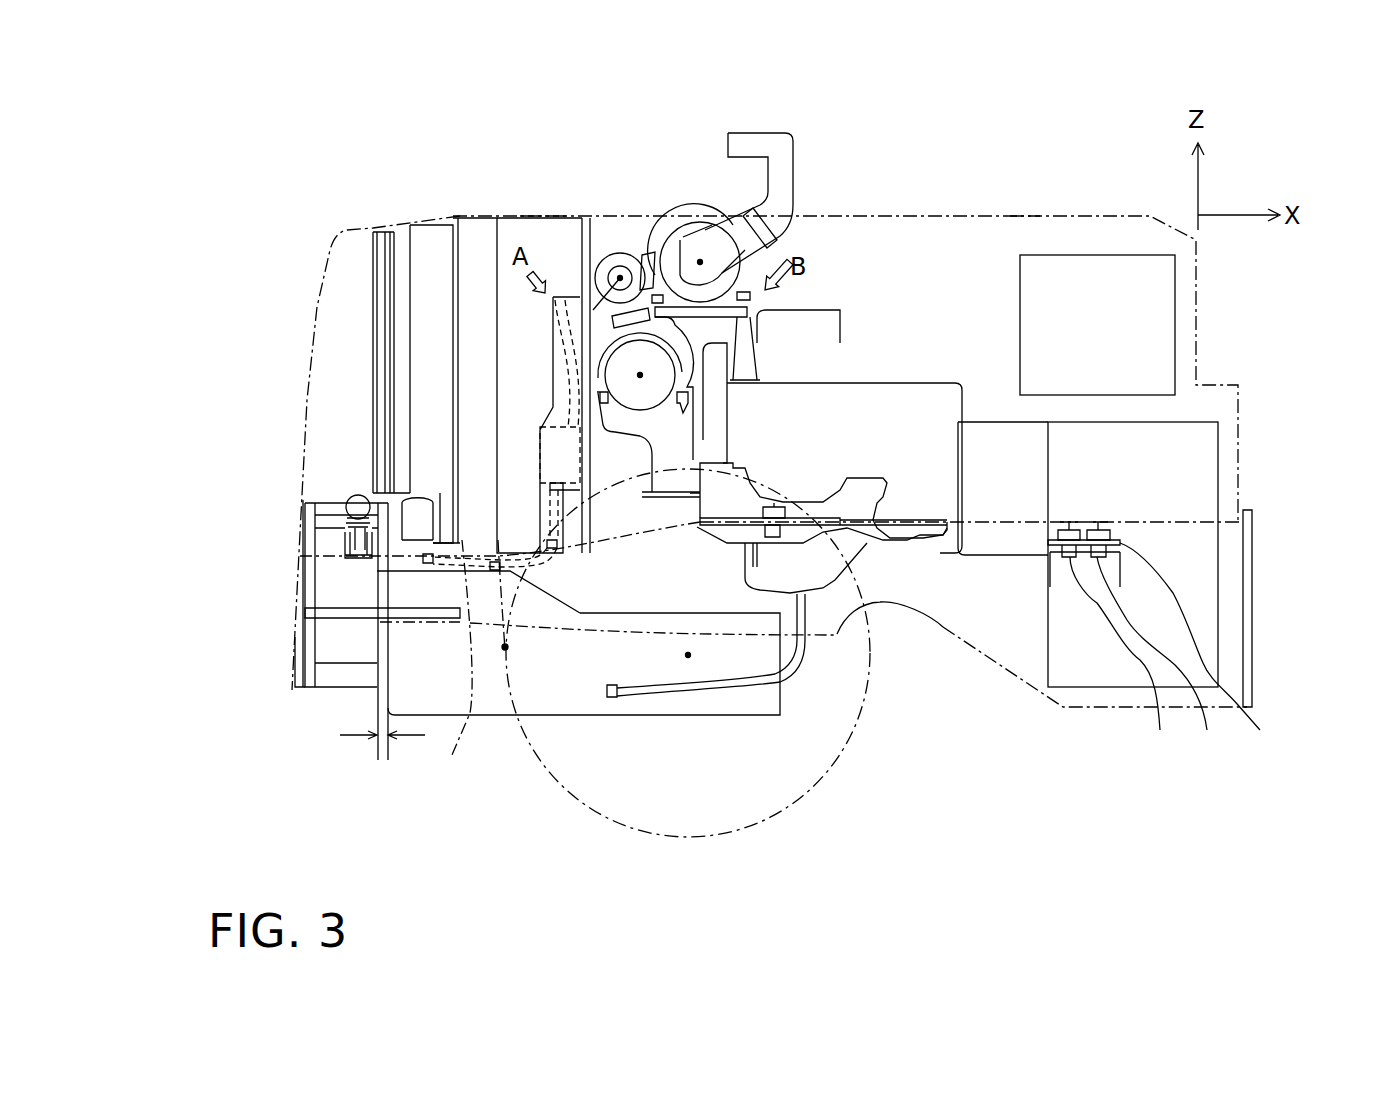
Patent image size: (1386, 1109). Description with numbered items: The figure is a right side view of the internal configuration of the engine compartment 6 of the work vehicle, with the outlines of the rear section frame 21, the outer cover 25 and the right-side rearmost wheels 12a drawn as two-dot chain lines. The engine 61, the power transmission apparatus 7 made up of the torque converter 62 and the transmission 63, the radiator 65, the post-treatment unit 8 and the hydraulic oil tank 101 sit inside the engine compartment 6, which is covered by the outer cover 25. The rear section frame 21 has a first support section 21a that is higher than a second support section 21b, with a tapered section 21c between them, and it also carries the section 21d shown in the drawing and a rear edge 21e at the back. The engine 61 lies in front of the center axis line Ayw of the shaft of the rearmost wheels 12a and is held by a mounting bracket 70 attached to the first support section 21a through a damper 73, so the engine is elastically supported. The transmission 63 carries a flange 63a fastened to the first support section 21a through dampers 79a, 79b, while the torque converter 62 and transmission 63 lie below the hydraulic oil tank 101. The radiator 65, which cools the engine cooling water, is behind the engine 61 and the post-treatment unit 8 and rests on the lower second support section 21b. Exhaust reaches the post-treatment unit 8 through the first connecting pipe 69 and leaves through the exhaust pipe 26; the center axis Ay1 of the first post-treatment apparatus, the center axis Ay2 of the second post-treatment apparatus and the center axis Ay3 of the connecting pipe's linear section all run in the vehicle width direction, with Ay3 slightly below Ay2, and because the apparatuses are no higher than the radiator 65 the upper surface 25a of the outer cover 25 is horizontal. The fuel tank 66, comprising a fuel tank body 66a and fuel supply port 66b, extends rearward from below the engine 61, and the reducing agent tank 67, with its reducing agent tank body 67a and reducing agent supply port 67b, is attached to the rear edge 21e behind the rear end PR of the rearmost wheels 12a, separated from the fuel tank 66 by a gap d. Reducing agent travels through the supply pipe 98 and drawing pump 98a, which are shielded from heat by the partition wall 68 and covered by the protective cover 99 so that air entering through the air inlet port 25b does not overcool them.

The engine compartment 6 is at (872, 296).
The power transmission apparatus 7 is at (1122, 757).
The post-treatment unit 8 is at (643, 236).
The rearmost wheels 12a is at (548, 773).
The rear section frame 21 is at (943, 640).
The first support section 21a is at (1223, 527).
The second support section 21b is at (425, 647).
The tapered section 21c is at (688, 657).
The cover front portion 21d is at (330, 503).
The rear edge 21e is at (297, 650).
The outer cover 25 is at (1200, 282).
The upper surface 25a is at (1027, 216).
The air inlet port 25b is at (546, 213).
The exhaust pipe 26 is at (775, 150).
The engine 61 is at (890, 410).
The torque converter 62 is at (990, 540).
The transmission 63 is at (1087, 640).
The flange 63a is at (1168, 649).
The radiator 65 is at (477, 280).
The fuel tank 66 is at (222, 325).
The fuel tank body 66a is at (465, 535).
The fuel supply port 66b is at (427, 540).
The reducing agent tank 67 is at (215, 505).
The reducing agent tank body 67a is at (348, 568).
The reducing agent supply port 67b is at (350, 518).
The partition wall 68 is at (580, 290).
The first connecting pipe 69 is at (742, 330).
The mounting bracket 70 is at (857, 505).
The damper 73 is at (773, 545).
The damper 79a is at (1146, 653).
The damper 79b is at (1147, 640).
The supply pipe 98 is at (540, 483).
The drawing pump 98a is at (550, 467).
The protective cover 99 is at (553, 356).
The hydraulic oil tank 101 is at (1100, 283).
The center axis of first post-treatment apparatus Ay1 is at (640, 375).
The center axis of second post-treatment apparatus Ay2 is at (700, 261).
The center axis of linear section Ay3 is at (620, 278).
The center axis line of rearmost wheel shaft Ayw is at (717, 695).
The rear end of rearmost wheels PR is at (505, 648).
The gap d is at (382, 763).